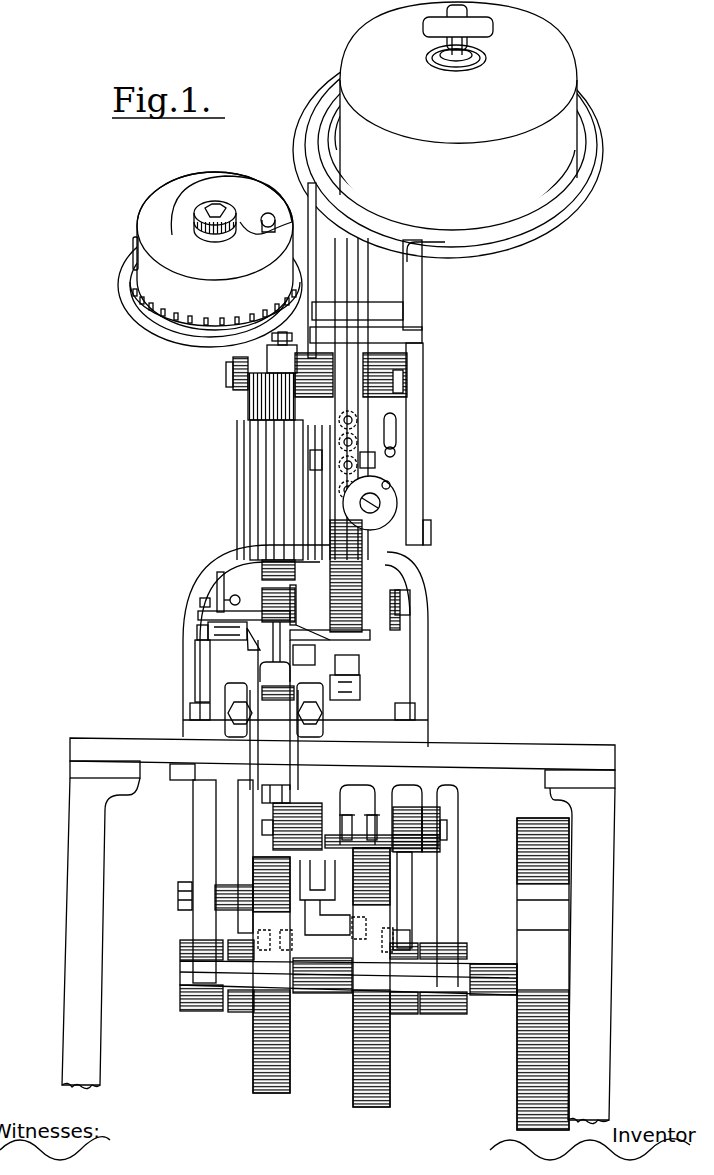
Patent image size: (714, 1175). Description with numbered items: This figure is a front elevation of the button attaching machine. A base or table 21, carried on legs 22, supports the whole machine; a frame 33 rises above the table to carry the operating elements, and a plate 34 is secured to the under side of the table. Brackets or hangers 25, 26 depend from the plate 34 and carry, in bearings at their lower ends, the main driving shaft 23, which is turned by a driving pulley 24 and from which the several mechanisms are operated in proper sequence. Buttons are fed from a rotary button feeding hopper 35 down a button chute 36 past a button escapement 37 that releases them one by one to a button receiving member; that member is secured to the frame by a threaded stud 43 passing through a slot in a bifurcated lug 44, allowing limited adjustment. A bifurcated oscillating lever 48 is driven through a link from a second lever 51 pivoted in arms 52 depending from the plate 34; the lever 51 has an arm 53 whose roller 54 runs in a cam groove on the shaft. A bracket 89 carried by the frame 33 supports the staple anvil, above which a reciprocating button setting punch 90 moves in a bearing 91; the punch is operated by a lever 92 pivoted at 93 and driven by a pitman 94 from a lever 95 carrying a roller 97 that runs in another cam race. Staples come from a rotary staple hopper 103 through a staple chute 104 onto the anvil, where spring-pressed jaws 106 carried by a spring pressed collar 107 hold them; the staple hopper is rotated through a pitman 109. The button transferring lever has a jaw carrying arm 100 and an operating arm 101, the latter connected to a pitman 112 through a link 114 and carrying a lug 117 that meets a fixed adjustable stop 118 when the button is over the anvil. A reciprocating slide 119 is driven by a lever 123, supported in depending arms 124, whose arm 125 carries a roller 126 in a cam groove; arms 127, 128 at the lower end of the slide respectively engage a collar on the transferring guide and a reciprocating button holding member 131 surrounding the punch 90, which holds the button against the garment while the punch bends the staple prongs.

The base or table 21 is at (540, 745).
The legs 22 is at (78, 795).
The main driving shaft 23 is at (485, 966).
The driving pulley 24 is at (530, 840).
The bracket or hanger 25 is at (455, 892).
The bracket or hanger 26 is at (205, 832).
The frame 33 is at (410, 456).
The plate 34 is at (372, 778).
The rotary button feeding hopper 35 is at (570, 49).
The button chute 36 is at (352, 302).
The button escapement 37 is at (398, 503).
The threaded stud 43 is at (359, 662).
The bifurcated lug 44 is at (360, 680).
The bifurcated oscillating lever 48 is at (355, 470).
The second lever 51 is at (420, 822).
The arms 52 is at (390, 793).
The arm 53 is at (412, 873).
The roller 54 is at (400, 934).
The bracket 89 is at (274, 715).
The button setting punch 90 is at (262, 400).
The bearing 91 is at (265, 507).
The lever 92 is at (285, 356).
The pivot 93 is at (232, 372).
The pitman 94 is at (320, 858).
The lever 95 is at (330, 902).
The roller 97 is at (353, 935).
The jaw carrying arm 100 is at (296, 622).
The operating arm 101 is at (198, 614).
The rotary staple hopper 103 is at (155, 222).
The staple chute 104 is at (200, 650).
The spring-pressed jaws 106 is at (262, 672).
The spring pressed collar 107 is at (291, 700).
The pitman 109 is at (288, 654).
The pitman 112 is at (255, 655).
The link 114 is at (215, 630).
The lug 117 is at (217, 580).
The fixed adjustable stop 118 is at (230, 600).
The reciprocating slide 119 is at (305, 470).
The lever 123 is at (295, 815).
The depending arms 124 is at (278, 794).
The arm 125 is at (300, 855).
The roller 126 is at (305, 993).
The arm 127 is at (385, 1080).
The arm 128 is at (300, 585).
The button holding member 131 is at (240, 592).